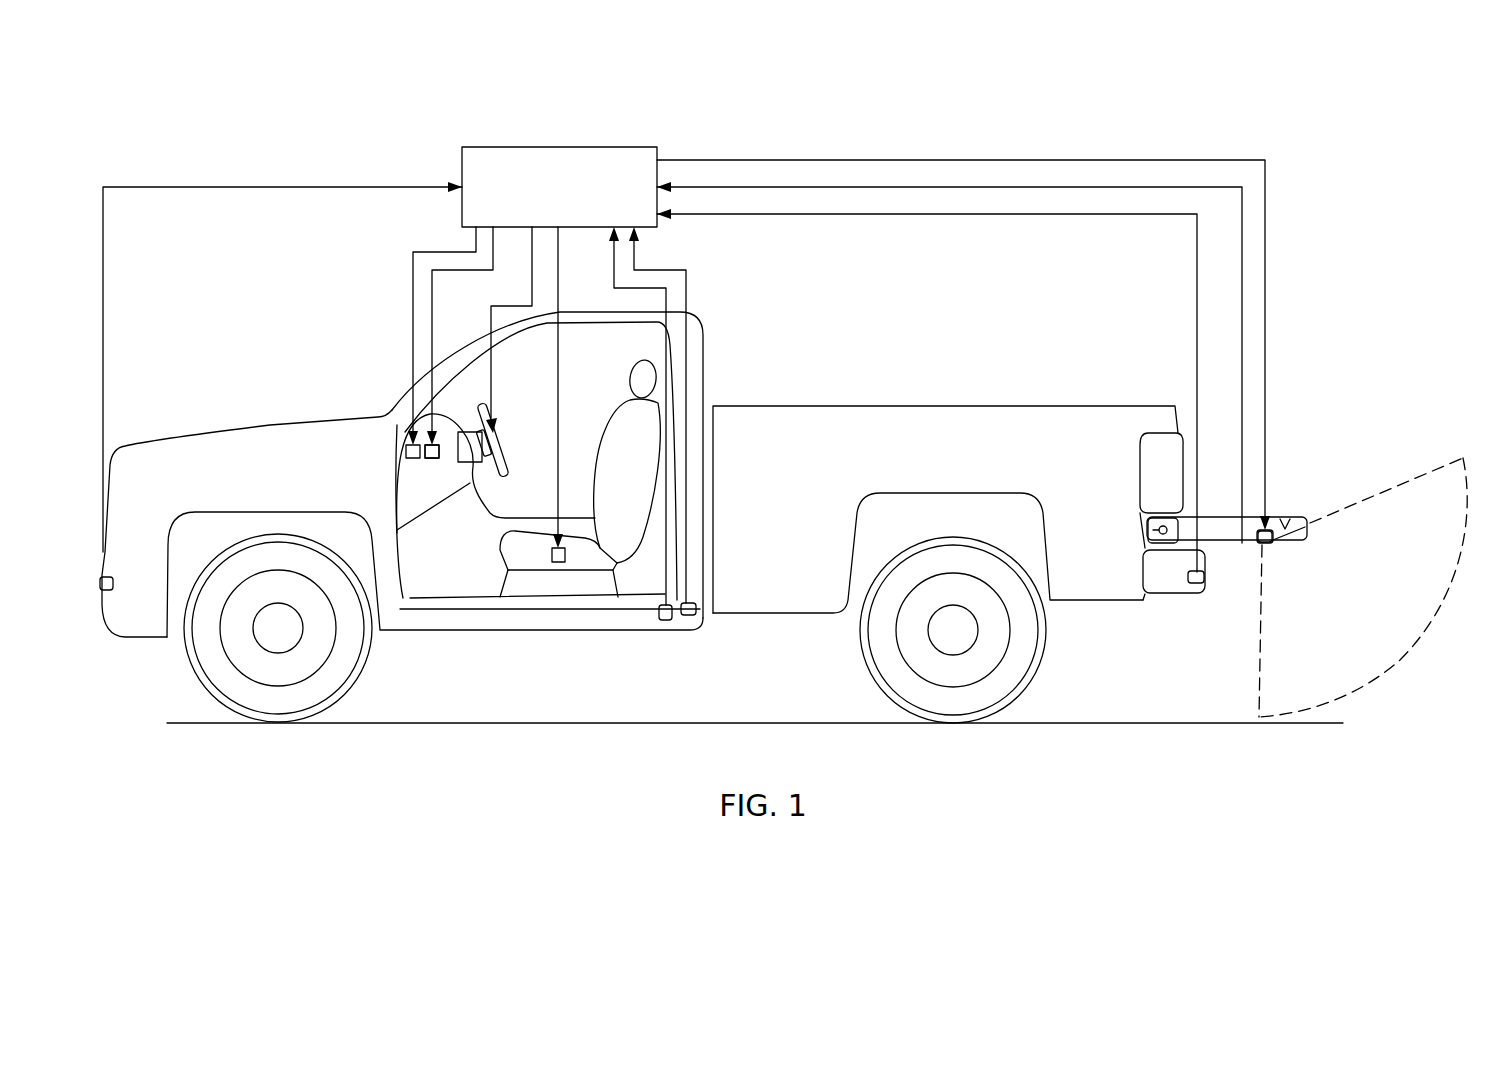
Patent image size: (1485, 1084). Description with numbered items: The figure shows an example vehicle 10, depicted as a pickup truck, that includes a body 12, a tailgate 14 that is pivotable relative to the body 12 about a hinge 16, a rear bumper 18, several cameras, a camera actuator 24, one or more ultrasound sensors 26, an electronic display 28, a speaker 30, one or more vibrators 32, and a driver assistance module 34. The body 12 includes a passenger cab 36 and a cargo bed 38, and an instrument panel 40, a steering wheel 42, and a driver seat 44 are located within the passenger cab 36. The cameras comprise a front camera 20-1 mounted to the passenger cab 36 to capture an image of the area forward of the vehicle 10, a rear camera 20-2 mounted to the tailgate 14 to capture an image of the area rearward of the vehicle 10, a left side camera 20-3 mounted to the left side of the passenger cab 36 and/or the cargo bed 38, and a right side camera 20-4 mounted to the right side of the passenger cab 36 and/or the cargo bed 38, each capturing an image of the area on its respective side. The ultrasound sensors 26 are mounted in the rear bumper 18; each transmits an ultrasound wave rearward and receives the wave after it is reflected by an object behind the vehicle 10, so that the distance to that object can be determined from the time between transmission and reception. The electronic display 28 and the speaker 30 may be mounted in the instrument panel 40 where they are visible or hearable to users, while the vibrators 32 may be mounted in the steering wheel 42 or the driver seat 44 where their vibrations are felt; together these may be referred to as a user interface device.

The vehicle 10 is at (234, 110).
The body 12 is at (260, 412).
The tailgate 14 is at (1223, 515).
The hinge 16 is at (1148, 527).
The rear bumper 18 is at (1172, 590).
The front camera 20-1 is at (112, 582).
The rear camera 20-2 is at (1258, 545).
The left side camera 20-3 is at (665, 620).
The right side camera 20-4 is at (712, 605).
The camera actuator 24 is at (1270, 518).
The ultrasound sensor 26 is at (1188, 575).
The electronic display 28 is at (432, 458).
The speaker 30 is at (405, 450).
The vibrator 32 is at (552, 562).
The driver assistance module 34 is at (617, 147).
The passenger cab 36 is at (569, 305).
The cargo bed 38 is at (858, 398).
The instrument panel 40 is at (438, 412).
The steering wheel 42 is at (509, 466).
The driver seat 44 is at (608, 421).